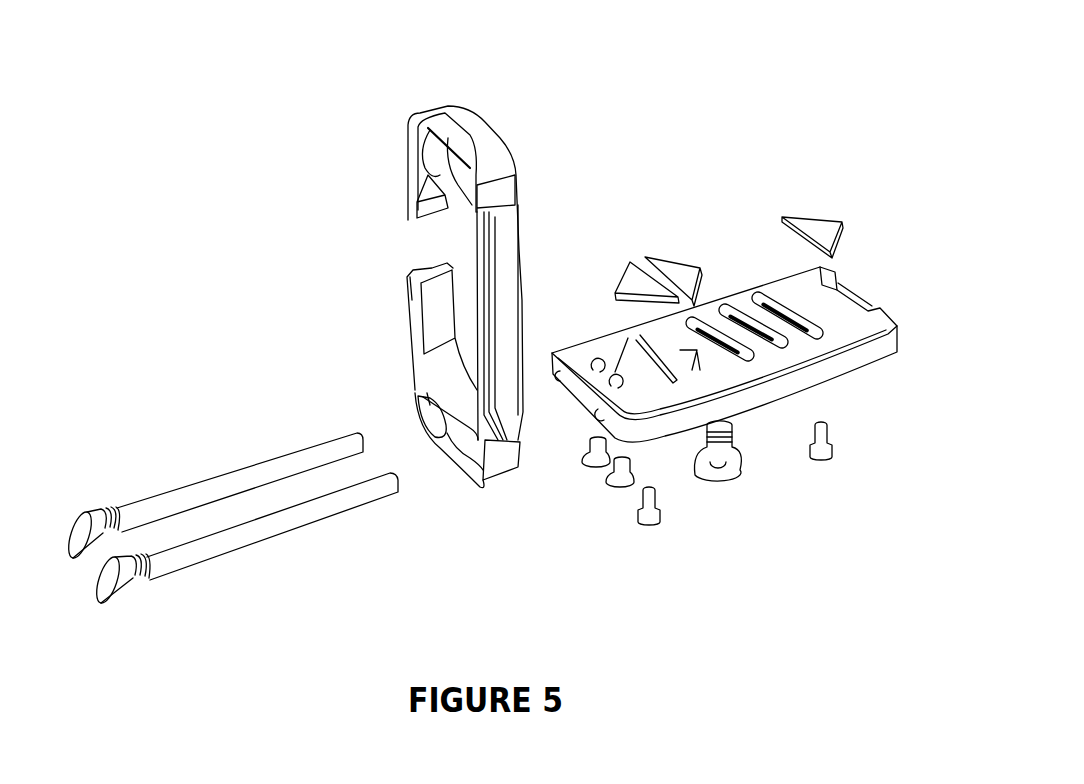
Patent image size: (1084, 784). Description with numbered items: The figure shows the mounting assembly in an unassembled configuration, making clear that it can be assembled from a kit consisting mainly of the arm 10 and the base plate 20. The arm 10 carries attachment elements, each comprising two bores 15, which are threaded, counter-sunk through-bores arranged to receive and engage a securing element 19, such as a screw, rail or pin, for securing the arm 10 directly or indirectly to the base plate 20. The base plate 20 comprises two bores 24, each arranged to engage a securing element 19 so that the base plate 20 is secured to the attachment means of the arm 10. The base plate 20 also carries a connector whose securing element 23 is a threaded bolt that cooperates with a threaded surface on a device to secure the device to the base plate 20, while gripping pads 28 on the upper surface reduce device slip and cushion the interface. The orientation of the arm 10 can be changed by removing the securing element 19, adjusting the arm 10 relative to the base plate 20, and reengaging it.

The arm 10 is at (502, 100).
The bores 15 is at (465, 172).
The securing element 19 is at (248, 477).
The base plate 20 is at (865, 469).
The securing element 23 is at (718, 470).
The bores 24 is at (603, 415).
The gripping pads 28 is at (818, 233).